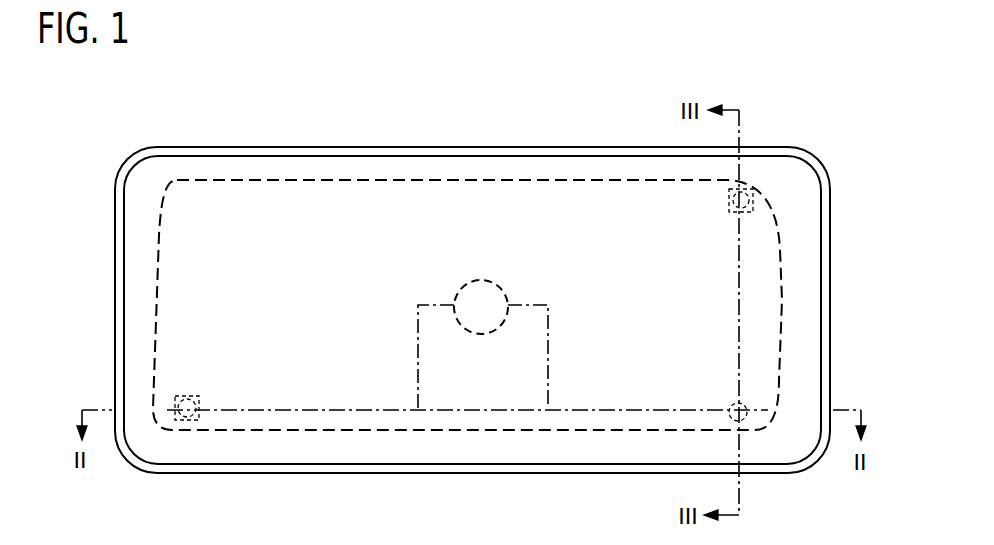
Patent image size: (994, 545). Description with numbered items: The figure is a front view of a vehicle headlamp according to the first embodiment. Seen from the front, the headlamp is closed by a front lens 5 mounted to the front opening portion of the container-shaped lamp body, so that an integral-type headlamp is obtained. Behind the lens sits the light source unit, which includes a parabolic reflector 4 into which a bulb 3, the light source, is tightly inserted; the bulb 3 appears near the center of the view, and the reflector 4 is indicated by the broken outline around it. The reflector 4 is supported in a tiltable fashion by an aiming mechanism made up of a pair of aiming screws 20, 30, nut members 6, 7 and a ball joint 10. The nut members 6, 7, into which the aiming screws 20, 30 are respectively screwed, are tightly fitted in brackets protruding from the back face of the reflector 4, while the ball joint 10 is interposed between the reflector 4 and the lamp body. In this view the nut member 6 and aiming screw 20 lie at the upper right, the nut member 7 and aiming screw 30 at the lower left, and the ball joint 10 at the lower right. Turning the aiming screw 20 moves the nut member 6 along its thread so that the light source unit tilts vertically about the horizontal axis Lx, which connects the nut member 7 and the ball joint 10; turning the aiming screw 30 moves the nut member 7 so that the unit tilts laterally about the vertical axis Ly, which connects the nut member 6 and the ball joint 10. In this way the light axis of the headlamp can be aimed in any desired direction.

The bulb 3 is at (481, 280).
The parabolic reflector 4 is at (388, 180).
The front lens 5 is at (292, 201).
The nut member 6 is at (752, 203).
The nut member 7 is at (185, 412).
The ball joint 10 is at (745, 418).
The aiming screw 20 is at (748, 192).
The aiming screw 30 is at (194, 418).
The horizontal axis Lx is at (342, 410).
The vertical axis Ly is at (739, 322).